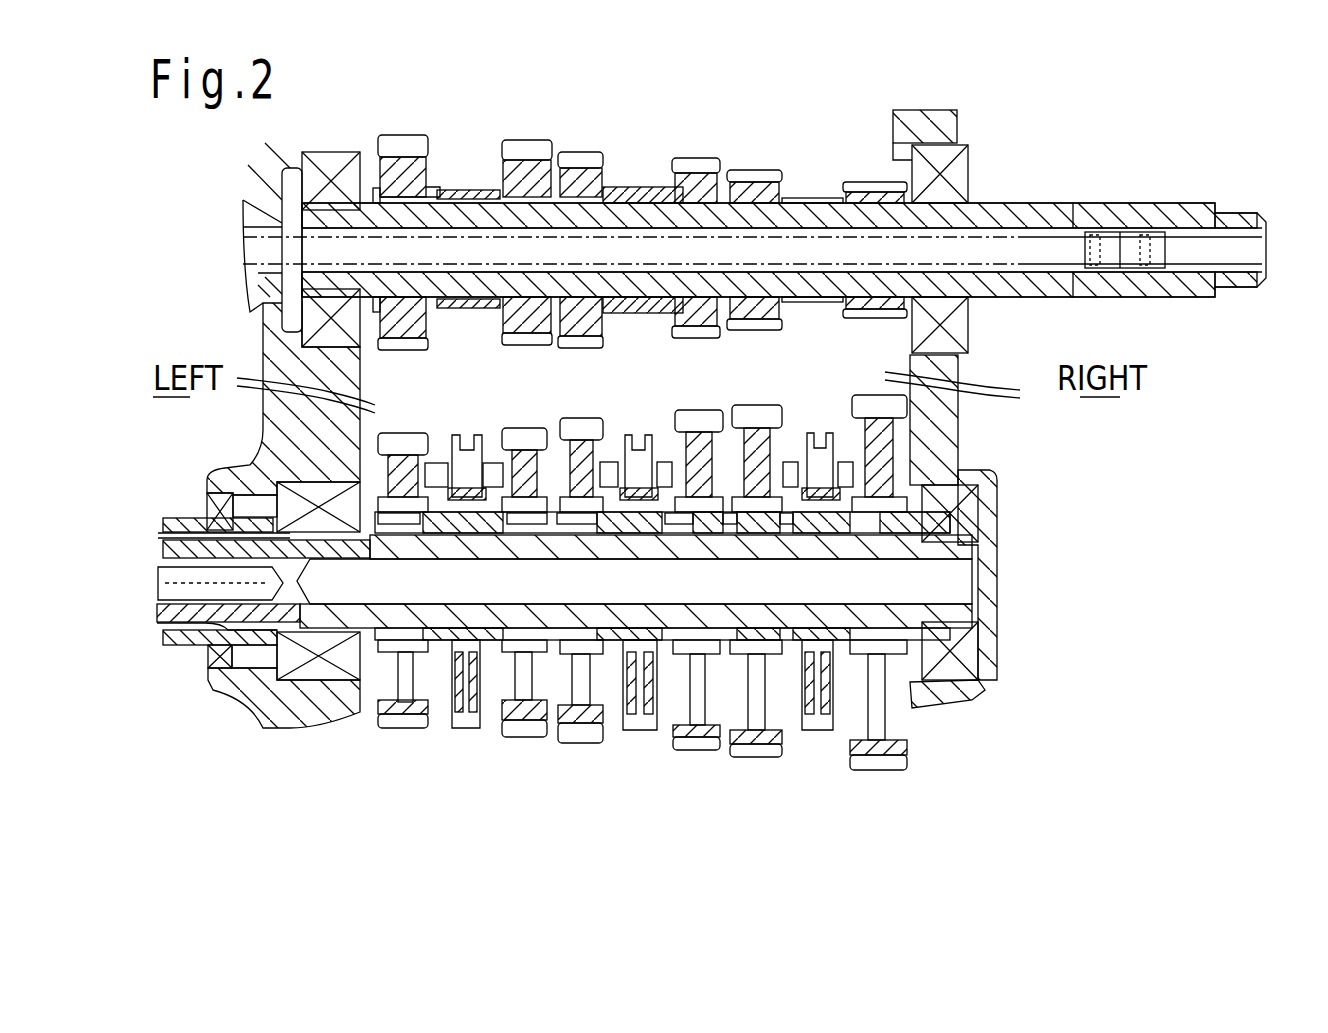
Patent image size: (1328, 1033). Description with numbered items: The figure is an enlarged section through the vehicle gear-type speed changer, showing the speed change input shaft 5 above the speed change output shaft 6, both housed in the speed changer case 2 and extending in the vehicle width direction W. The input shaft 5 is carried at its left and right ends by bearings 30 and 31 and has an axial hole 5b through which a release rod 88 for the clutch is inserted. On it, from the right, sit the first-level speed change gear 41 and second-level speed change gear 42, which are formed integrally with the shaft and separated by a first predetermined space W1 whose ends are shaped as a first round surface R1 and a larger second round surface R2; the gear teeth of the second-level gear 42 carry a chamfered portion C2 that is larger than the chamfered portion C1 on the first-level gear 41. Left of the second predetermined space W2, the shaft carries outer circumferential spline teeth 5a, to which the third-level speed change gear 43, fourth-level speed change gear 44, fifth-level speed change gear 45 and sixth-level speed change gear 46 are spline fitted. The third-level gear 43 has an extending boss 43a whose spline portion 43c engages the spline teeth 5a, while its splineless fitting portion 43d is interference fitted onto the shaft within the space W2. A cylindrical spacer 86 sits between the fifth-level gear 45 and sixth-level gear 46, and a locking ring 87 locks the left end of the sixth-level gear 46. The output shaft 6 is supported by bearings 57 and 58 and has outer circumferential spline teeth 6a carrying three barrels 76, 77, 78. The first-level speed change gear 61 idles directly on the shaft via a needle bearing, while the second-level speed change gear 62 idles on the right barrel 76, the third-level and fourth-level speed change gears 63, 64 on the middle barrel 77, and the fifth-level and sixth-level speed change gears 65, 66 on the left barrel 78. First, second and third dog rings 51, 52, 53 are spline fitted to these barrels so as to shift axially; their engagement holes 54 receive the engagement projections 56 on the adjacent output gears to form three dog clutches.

The speed changer case 2 is at (945, 455).
The speed change input shaft 5 is at (1035, 210).
The outer circumferential spline teeth 5a is at (460, 303).
The axial hole 5b is at (1130, 290).
The speed change output shaft 6 is at (943, 550).
The outer circumferential spline teeth 6a is at (605, 535).
The bearing 30 is at (330, 168).
The bearing 31 is at (950, 185).
The first-level speed change gear 41 is at (872, 188).
The second-level speed change gear 42 is at (745, 185).
The third-level speed change gear 43 is at (690, 165).
The extending boss 43a is at (640, 190).
The spline portion 43c is at (647, 203).
The fitting portion 43d is at (700, 203).
The fourth-level speed change gear 44 is at (580, 160).
The fifth-level speed change gear 45 is at (522, 150).
The sixth-level speed change gear 46 is at (405, 150).
The first dog ring 51 is at (818, 722).
The second dog ring 52 is at (638, 722).
The third dog ring 53 is at (462, 718).
The engagement holes 54 is at (465, 470).
The engagement projections 56 is at (440, 466).
The bearing 57 is at (316, 673).
The bearing 58 is at (950, 665).
The first-level speed change gear 61 is at (880, 762).
The second-level speed change gear 62 is at (757, 748).
The third-level speed change gear 63 is at (696, 742).
The fourth-level speed change gear 64 is at (580, 732).
The fifth-level speed change gear 65 is at (520, 730).
The sixth-level speed change gear 66 is at (402, 720).
The right barrel 76 is at (808, 512).
The middle barrel 77 is at (652, 508).
The left barrel 78 is at (447, 520).
The cylindrical spacer 86 is at (466, 190).
The locking ring 87 is at (376, 190).
The release rod 88 is at (1088, 230).
The vehicle width direction W is at (568, 82).
The first predetermined space W1 is at (783, 118).
The second predetermined space W2 is at (678, 118).
The chamfered portion C1 is at (860, 196).
The chamfered portion C2 is at (768, 196).
The first round surface R1 is at (835, 200).
The second round surface R2 is at (788, 198).